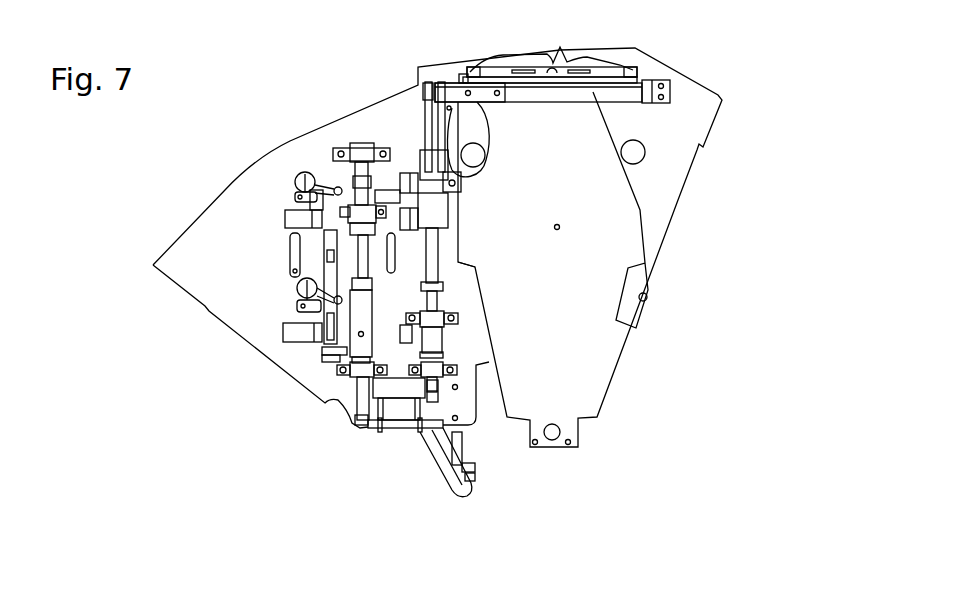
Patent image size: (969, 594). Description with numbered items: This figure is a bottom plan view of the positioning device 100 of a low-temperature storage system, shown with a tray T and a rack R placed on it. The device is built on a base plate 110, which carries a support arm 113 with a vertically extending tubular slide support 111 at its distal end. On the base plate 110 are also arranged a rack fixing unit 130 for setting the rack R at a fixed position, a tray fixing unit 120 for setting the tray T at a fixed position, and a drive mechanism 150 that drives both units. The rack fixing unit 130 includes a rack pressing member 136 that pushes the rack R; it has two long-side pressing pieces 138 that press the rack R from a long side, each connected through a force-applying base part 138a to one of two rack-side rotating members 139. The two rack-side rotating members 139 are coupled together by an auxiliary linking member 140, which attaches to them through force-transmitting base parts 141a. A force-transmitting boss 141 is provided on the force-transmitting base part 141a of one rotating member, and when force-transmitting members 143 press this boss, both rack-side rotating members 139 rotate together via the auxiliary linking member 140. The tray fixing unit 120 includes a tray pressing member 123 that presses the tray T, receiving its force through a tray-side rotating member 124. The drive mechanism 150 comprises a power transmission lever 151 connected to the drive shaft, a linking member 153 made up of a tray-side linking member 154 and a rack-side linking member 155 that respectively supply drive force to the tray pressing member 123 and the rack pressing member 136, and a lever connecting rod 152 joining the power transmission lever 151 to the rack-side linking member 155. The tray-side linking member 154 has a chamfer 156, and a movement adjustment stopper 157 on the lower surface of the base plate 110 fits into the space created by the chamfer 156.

The positioning device 100 is at (146, 31).
The base plate 110 is at (177, 257).
The slide support 111 is at (472, 478).
The support arm 113 is at (485, 470).
The tray fixing unit 120 is at (687, 245).
The tray pressing member 123 is at (560, 60).
The tray-side rotating member 124 is at (628, 103).
The rack fixing unit 130 is at (203, 347).
The rack pressing member 136 is at (305, 172).
The long-side pressing piece 138 is at (262, 113).
The force-applying base part 138a is at (295, 197).
The rack-side rotating member 139 is at (296, 178).
The auxiliary linking member 140 is at (352, 148).
The force-transmitting boss 141 is at (328, 350).
The force-transmitting base part 141a is at (345, 245).
The force-transmitting member 143 is at (346, 245).
The drive mechanism 150 is at (483, 440).
The power transmission lever 151 is at (402, 407).
The lever connecting rod 152 is at (392, 425).
The linking member 153 is at (558, 285).
The tray-side linking member 154 is at (427, 262).
The rack-side linking member 155 is at (362, 272).
The chamfer 156 is at (465, 73).
The movement adjustment stopper 157 is at (419, 172).
The rack R is at (393, 190).
The tray T is at (600, 220).